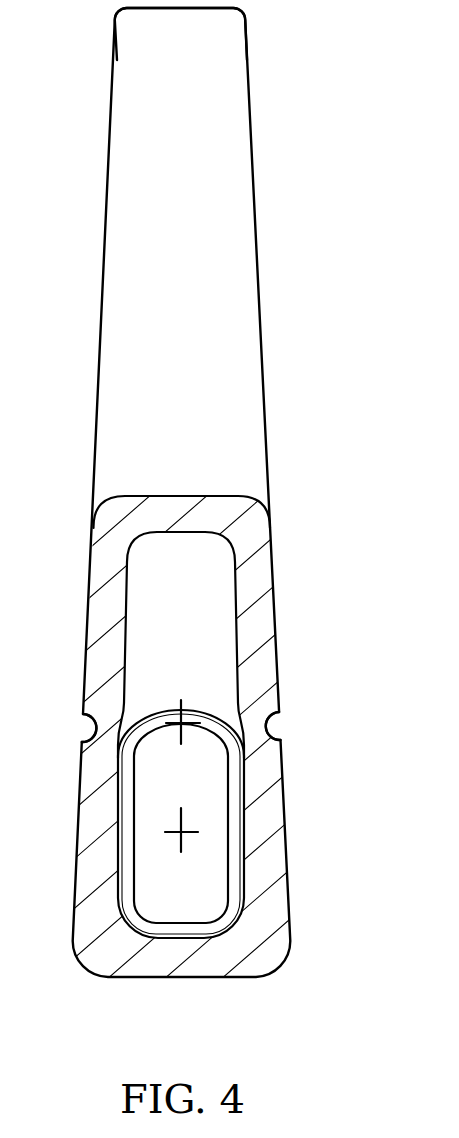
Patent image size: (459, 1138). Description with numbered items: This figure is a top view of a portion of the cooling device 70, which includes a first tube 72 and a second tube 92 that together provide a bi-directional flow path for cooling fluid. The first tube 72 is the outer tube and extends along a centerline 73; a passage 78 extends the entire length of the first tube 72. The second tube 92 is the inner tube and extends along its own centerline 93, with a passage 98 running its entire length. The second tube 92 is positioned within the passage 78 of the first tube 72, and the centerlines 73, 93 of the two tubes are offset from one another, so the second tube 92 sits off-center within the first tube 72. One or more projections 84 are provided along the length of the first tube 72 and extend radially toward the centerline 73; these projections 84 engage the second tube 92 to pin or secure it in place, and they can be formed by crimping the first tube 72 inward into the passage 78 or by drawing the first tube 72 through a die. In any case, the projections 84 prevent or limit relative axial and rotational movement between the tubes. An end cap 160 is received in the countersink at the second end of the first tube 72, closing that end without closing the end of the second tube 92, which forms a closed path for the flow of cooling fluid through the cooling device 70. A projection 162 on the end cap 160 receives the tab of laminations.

The cooling device 70 is at (322, 675).
The first tube 72 is at (257, 598).
The centerline 73 is at (198, 723).
The passage 78 is at (183, 614).
The projections 84 is at (120, 726).
The second tube 92 is at (232, 882).
The centerline 93 is at (197, 832).
The passage 98 is at (173, 895).
The end cap 160 is at (268, 483).
The projection 162 is at (223, 141).